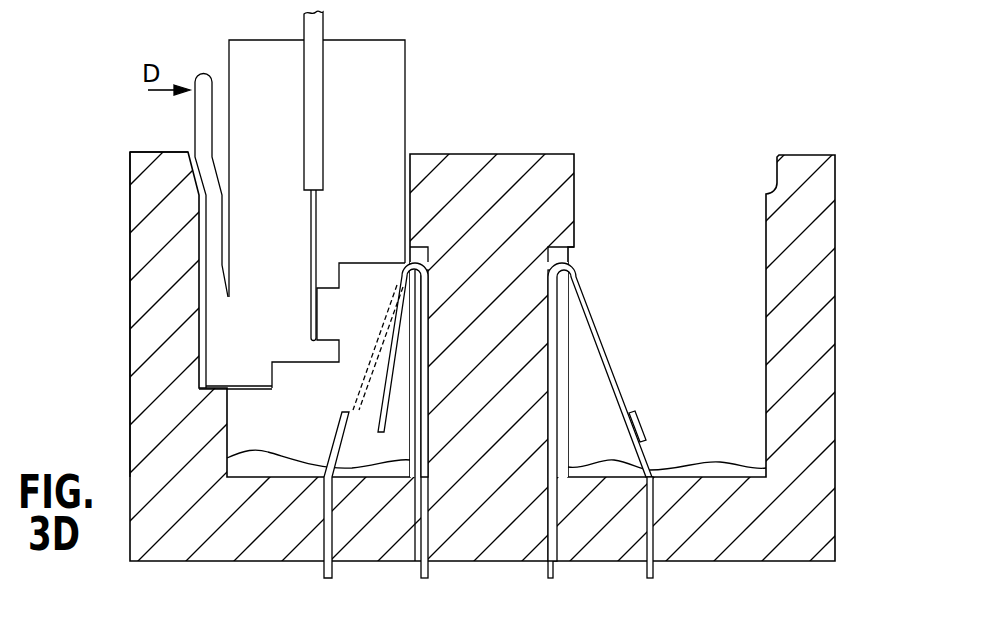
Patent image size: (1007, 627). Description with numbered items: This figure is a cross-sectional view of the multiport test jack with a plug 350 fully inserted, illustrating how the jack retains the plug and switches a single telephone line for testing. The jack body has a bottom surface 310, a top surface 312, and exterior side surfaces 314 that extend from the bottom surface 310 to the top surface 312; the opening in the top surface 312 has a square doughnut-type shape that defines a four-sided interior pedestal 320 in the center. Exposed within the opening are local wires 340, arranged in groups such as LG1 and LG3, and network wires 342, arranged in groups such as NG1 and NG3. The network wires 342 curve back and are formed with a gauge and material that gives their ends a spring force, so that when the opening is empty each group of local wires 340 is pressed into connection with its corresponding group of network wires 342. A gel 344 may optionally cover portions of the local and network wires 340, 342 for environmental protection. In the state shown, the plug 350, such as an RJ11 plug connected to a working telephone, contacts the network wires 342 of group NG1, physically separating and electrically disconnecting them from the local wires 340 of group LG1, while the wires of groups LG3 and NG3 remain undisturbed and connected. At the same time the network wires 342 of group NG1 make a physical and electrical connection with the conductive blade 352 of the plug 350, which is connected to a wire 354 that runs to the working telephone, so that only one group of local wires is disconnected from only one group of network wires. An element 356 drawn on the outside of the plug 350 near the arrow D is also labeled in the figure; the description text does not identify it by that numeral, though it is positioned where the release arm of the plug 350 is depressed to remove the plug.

The bottom surface 310 is at (172, 562).
The top surface 312 is at (146, 152).
The exterior side surfaces 314 is at (130, 298).
The interior pedestal 320 is at (506, 154).
The local wires 340 is at (322, 572).
The network wires 342 is at (420, 572).
The gel 344 is at (412, 250).
The plug 350 is at (406, 66).
The conductive blade 352 is at (363, 272).
The wire 354 is at (317, 196).
The bending blade 356 is at (201, 72).
The network wire group NG1 is at (386, 373).
The network wire group NG3 is at (594, 300).
The local wire group LG1 is at (343, 424).
The local wire group LG3 is at (646, 458).